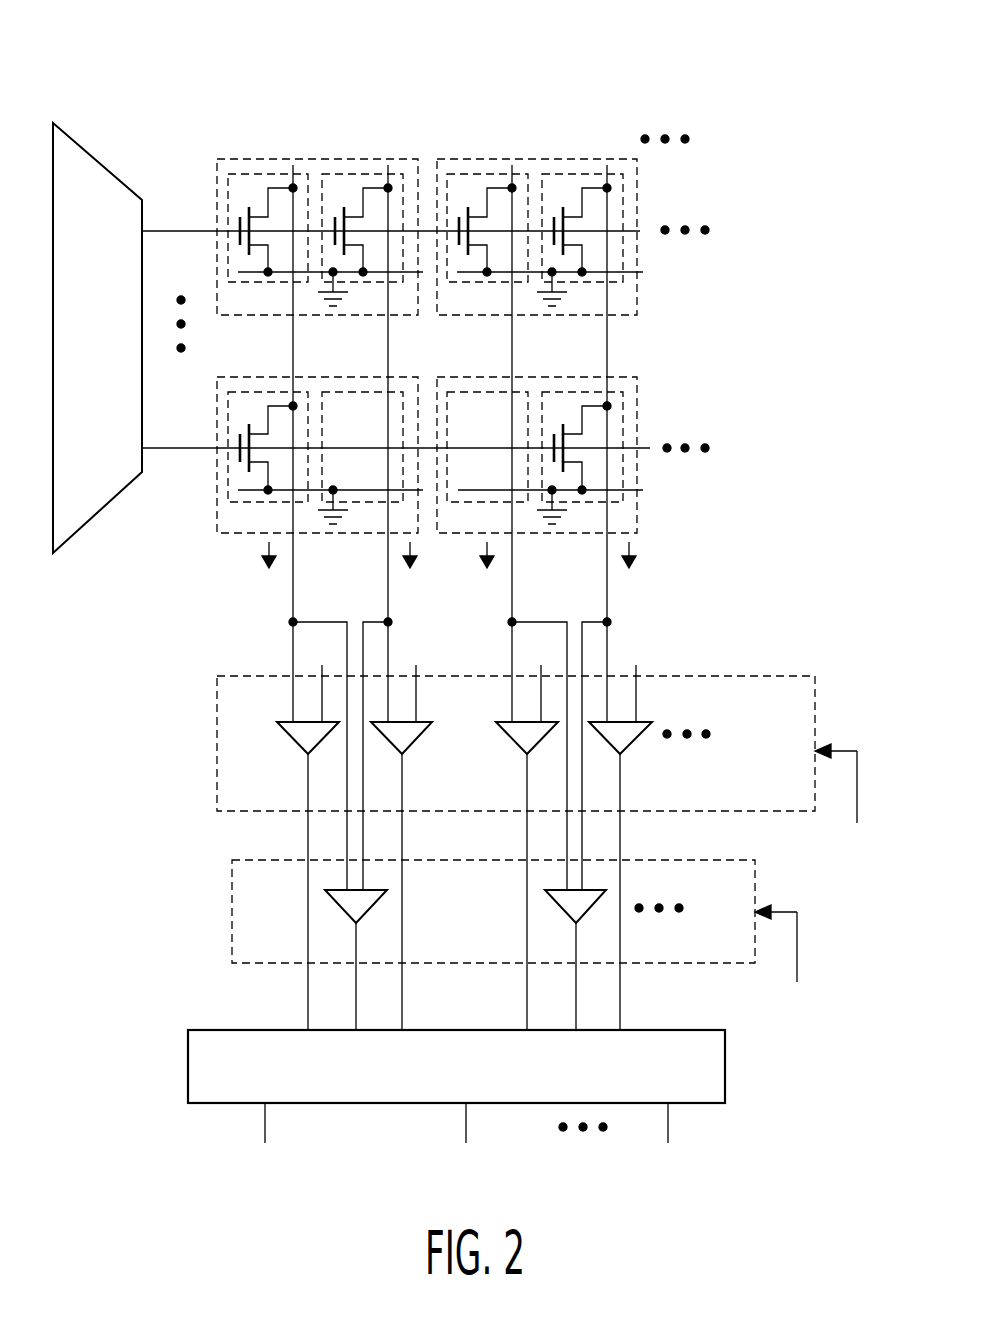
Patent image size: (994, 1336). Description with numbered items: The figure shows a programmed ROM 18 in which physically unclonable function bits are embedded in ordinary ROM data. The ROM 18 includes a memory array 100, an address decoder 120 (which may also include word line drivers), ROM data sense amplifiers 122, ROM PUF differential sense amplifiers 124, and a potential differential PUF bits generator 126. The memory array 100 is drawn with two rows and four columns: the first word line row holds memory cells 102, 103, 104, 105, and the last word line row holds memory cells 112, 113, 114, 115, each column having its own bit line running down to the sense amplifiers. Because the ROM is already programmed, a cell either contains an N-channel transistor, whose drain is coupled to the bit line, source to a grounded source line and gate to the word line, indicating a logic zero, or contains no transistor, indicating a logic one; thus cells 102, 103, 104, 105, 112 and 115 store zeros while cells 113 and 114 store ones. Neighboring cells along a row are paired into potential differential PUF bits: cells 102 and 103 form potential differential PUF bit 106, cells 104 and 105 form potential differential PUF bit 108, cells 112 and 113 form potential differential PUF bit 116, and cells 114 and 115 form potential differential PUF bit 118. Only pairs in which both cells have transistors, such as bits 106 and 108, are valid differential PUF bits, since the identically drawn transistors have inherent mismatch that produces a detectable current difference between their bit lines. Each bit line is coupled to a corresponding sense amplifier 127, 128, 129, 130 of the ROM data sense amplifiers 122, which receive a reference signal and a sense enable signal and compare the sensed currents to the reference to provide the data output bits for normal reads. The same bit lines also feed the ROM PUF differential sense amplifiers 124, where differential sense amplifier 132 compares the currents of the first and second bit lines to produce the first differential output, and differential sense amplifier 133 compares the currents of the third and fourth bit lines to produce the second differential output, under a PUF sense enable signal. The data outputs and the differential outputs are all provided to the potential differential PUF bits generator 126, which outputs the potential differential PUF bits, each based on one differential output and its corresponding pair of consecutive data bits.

The ROM 18 is at (124, 32).
The memory array 100 is at (636, 94).
The memory cell 102 is at (246, 173).
The memory cell 103 is at (345, 173).
The memory cell 104 is at (532, 173).
The memory cell 105 is at (637, 190).
The potential differential PUF bit 106 is at (217, 185).
The potential differential PUF bit 108 is at (637, 297).
The memory cell 112 is at (278, 392).
The memory cell 113 is at (372, 392).
The memory cell 114 is at (497, 392).
The memory cell 115 is at (592, 392).
The potential differential PUF bit 116 is at (217, 500).
The potential differential PUF bit 118 is at (637, 465).
The address decoder 120 is at (117, 366).
The ROM data sense amplifiers 122 is at (217, 752).
The ROM PUF differential sense amplifiers 124 is at (232, 925).
The potential differential PUF bits generator 126 is at (465, 1093).
The sense amplifier 127 is at (283, 733).
The sense amplifier 128 is at (418, 740).
The sense amplifier 129 is at (504, 733).
The sense amplifier 130 is at (638, 739).
The differential sense amplifier 132 is at (338, 906).
The differential sense amplifier 133 is at (560, 906).